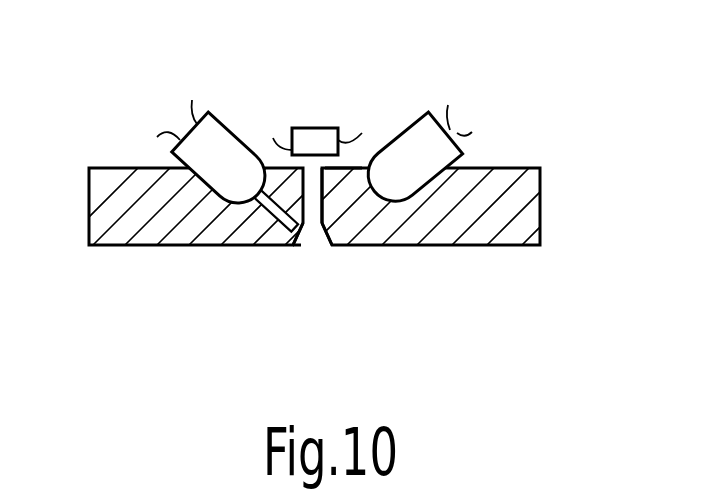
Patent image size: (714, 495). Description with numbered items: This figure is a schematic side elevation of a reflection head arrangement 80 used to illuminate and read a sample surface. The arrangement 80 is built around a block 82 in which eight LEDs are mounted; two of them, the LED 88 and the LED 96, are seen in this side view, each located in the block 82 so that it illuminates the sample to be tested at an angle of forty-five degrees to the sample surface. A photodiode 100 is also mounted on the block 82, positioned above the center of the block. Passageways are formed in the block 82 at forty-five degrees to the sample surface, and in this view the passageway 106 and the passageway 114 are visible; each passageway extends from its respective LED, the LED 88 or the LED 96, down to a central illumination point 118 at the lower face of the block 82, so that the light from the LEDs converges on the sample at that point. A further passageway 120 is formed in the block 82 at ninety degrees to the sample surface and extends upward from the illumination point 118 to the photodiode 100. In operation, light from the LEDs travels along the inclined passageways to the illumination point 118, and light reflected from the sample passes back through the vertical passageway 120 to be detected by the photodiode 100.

The reflection head arrangement 80 is at (508, 266).
The block 82 is at (128, 216).
The LED 88 is at (462, 122).
The LED 96 is at (160, 108).
The photodiode 100 is at (316, 125).
The passageway 106 is at (360, 207).
The passageway 114 is at (283, 228).
The central illumination point 118 is at (311, 260).
The further passageway 120 is at (347, 167).